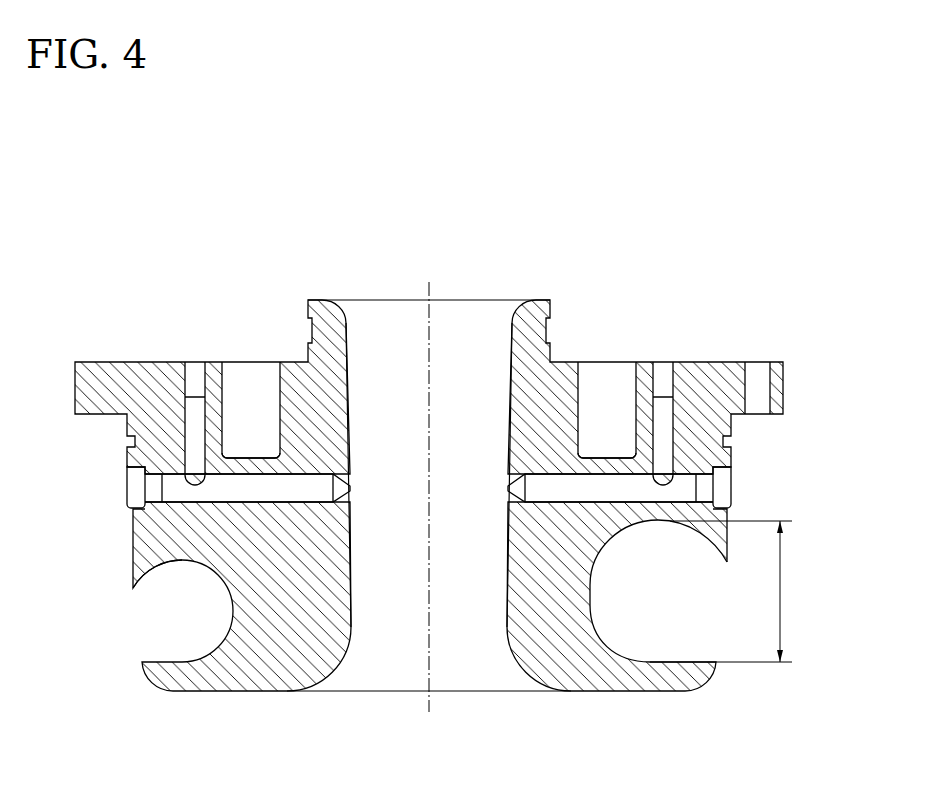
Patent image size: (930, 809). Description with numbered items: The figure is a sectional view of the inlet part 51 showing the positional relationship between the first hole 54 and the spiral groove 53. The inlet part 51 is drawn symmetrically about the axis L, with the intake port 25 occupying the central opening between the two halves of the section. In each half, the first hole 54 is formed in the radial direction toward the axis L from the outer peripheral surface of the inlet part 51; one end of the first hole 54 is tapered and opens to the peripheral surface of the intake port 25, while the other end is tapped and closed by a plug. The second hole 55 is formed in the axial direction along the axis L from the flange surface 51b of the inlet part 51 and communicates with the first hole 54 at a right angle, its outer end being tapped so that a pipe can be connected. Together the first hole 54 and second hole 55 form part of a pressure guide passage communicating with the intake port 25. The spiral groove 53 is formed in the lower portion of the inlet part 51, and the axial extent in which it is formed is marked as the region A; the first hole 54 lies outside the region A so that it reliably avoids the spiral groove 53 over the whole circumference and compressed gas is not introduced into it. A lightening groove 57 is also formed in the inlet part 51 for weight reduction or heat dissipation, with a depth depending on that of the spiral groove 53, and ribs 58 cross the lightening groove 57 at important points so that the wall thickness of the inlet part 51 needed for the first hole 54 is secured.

The inlet part 51 is at (103, 371).
The flange surface 51b is at (708, 362).
The spiral groove 53 is at (595, 612).
The first hole 54 is at (298, 482).
The second hole 55 is at (204, 398).
The lightening groove 57 is at (240, 540).
The rib 58 is at (230, 533).
The intake port 25 is at (350, 432).
The axis L is at (430, 400).
The region A is at (784, 590).